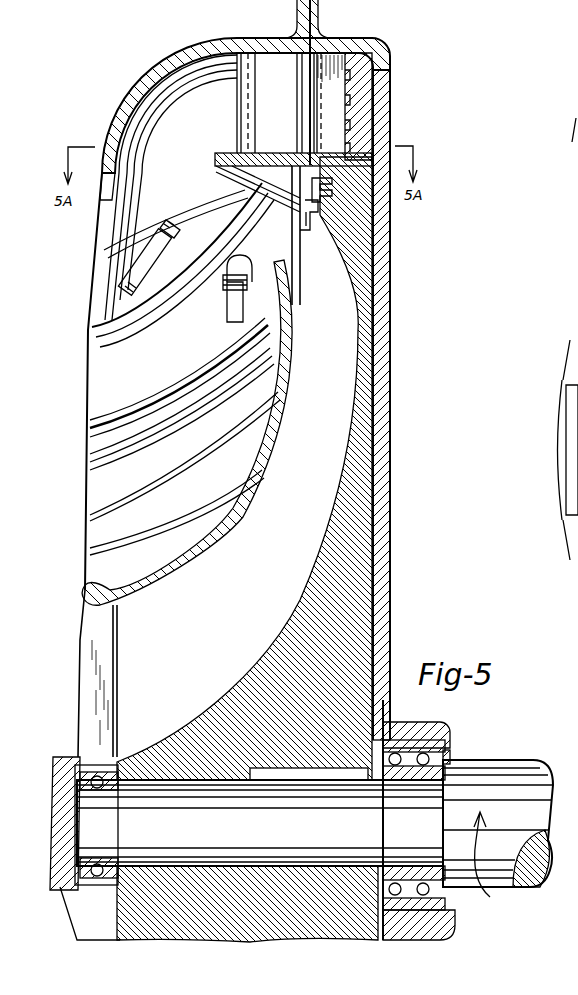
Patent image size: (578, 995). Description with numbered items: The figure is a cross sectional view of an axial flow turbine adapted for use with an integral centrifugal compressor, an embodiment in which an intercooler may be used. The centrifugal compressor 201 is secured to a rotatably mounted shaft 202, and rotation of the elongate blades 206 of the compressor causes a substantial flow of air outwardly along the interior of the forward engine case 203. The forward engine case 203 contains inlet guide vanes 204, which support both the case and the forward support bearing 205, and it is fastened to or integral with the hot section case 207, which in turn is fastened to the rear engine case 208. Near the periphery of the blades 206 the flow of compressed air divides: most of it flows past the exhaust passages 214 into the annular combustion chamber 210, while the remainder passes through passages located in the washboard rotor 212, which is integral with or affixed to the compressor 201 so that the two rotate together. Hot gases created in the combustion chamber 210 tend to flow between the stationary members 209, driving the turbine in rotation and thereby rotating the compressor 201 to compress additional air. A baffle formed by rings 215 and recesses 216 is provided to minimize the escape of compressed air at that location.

The centrifugal compressor 201 is at (357, 472).
The shaft 202 is at (292, 833).
The forward engine case 203 is at (163, 574).
The inlet guide vanes 204 is at (90, 681).
The forward support bearing 205 is at (90, 763).
The elongate blades 206 is at (237, 551).
The hot section case 207 is at (160, 56).
The rear engine case 208 is at (394, 79).
The stationary members 209 is at (236, 98).
The annular combustion chamber 210 is at (210, 139).
The washboard rotor 212 is at (362, 118).
The exhaust passages 214 is at (225, 206).
The rings 215 is at (316, 228).
The recesses 216 is at (330, 198).